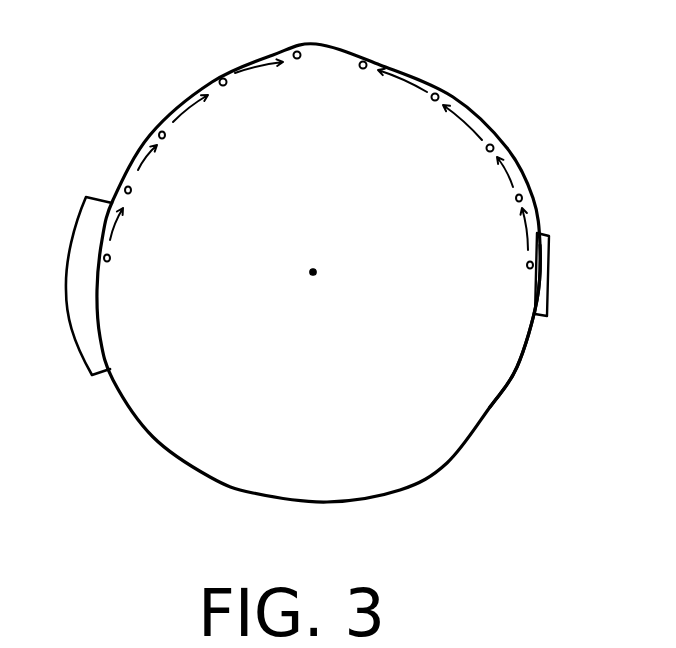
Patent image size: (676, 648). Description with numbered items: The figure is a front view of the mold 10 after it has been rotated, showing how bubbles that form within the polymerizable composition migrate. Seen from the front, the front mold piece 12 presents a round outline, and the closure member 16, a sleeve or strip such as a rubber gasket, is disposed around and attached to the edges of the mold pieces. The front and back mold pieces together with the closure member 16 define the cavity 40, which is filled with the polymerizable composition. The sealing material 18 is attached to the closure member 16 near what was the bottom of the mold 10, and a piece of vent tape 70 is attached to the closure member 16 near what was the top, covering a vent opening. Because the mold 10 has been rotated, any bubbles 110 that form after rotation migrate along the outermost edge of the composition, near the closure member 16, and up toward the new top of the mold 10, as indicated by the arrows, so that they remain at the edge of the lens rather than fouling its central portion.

The mold 10 is at (566, 99).
The front mold piece 12 is at (460, 422).
The closure member 16 is at (517, 367).
The sealing material 18 is at (77, 345).
The cavity 40 is at (259, 372).
The vent tape 70 is at (546, 290).
The bubbles 110 is at (111, 258).